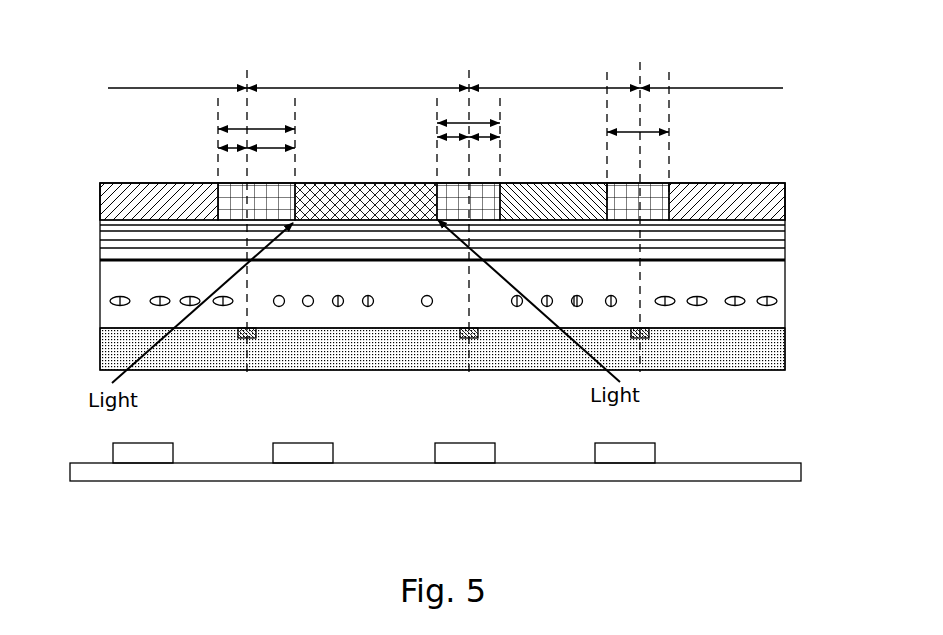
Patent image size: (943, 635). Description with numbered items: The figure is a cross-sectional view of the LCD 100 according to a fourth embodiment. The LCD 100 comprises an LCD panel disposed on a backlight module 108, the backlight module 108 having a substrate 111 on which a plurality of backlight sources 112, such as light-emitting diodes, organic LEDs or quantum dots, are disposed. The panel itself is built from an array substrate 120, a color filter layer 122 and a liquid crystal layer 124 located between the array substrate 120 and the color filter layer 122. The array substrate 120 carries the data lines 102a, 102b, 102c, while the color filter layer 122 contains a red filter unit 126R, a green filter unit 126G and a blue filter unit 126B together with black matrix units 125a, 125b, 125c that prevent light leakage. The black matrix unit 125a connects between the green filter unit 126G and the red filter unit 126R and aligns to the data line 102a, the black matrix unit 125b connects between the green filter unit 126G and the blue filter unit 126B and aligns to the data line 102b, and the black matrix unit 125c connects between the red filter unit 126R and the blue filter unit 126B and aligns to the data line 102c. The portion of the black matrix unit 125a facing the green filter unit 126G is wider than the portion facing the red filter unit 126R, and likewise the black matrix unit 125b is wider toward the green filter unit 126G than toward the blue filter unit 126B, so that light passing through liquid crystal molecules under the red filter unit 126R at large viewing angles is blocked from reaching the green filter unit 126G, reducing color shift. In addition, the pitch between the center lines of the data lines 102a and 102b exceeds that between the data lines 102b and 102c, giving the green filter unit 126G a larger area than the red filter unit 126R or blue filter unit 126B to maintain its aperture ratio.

The LCD 100 is at (456, 55).
The data line 102a is at (250, 338).
The data line 102b is at (462, 338).
The data line 102c is at (648, 338).
The backlight module 108 is at (812, 470).
The substrate 111 is at (238, 472).
The backlight sources 112 is at (147, 455).
The array substrate 120 is at (93, 347).
The color filter layer 122 is at (705, 178).
The liquid crystal layer 124 is at (334, 306).
The black matrix unit 125a is at (263, 217).
The black matrix unit 125b is at (480, 217).
The black matrix unit 125c is at (661, 216).
The red filter unit 126R is at (178, 193).
The green filter unit 126G is at (329, 199).
The blue filter unit 126B is at (538, 192).